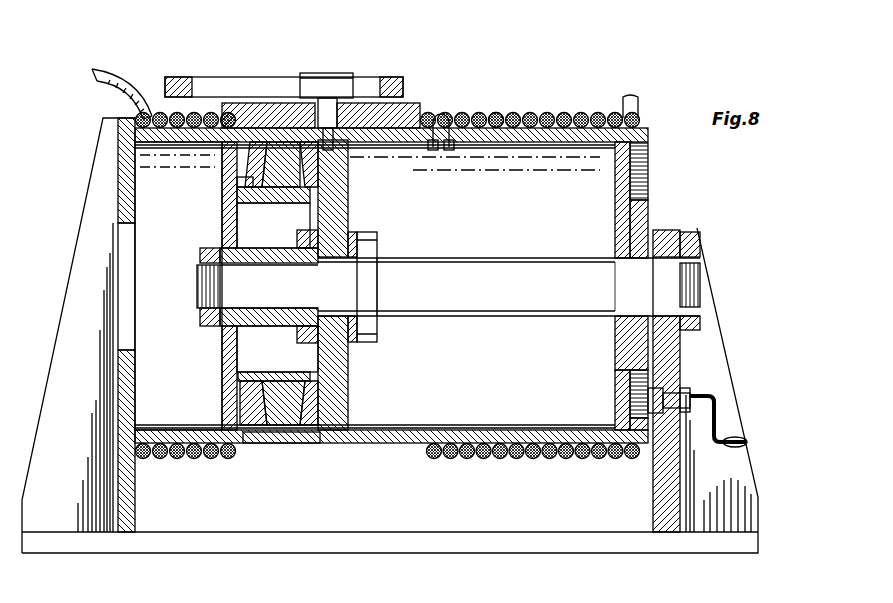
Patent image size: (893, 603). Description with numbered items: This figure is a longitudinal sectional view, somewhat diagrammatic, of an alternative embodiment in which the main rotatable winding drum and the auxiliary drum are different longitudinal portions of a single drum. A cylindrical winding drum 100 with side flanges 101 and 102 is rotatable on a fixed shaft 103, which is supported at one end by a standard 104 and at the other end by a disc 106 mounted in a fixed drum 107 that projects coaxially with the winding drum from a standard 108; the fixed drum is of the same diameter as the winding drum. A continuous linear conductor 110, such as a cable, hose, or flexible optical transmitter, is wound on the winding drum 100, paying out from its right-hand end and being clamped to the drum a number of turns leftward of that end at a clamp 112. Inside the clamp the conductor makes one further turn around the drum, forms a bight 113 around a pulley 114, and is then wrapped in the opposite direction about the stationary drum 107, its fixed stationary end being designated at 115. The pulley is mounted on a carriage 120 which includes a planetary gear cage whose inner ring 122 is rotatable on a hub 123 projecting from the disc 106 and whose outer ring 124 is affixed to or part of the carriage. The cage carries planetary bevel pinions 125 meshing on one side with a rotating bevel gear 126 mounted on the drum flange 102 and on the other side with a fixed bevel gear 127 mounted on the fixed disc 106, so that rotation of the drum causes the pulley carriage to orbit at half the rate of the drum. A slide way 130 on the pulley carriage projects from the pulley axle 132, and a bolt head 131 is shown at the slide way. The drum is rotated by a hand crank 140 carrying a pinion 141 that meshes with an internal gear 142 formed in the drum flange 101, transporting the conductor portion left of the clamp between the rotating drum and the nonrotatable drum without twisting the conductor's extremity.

The cylindrical winding drum 100 is at (505, 142).
The side flange 101 is at (616, 207).
The side flange 102 is at (345, 218).
The fixed shaft 103 is at (516, 237).
The standard 104 is at (675, 345).
The disc 106 is at (224, 218).
The fixed drum 107 is at (170, 110).
The standard 108 is at (118, 177).
The continuous linear conductor 110 is at (556, 110).
The clamp 112 is at (493, 117).
The bight 113 is at (437, 113).
The pulley 114 is at (412, 104).
The fixed stationary end 115 is at (110, 90).
The carriage 120 is at (247, 145).
The inner ring 122 is at (290, 195).
The hub 123 is at (293, 225).
The outer ring 124 is at (250, 140).
The planetary bevel pinions 125 is at (350, 163).
The rotating bevel gear 126 is at (348, 400).
The fixed bevel gear 127 is at (240, 398).
The slide way 130 is at (215, 77).
The bolt head 131 is at (337, 72).
The pulley axle 132 is at (300, 118).
The hand crank 140 is at (718, 400).
The pinion 141 is at (625, 398).
The internal gear 142 is at (648, 175).